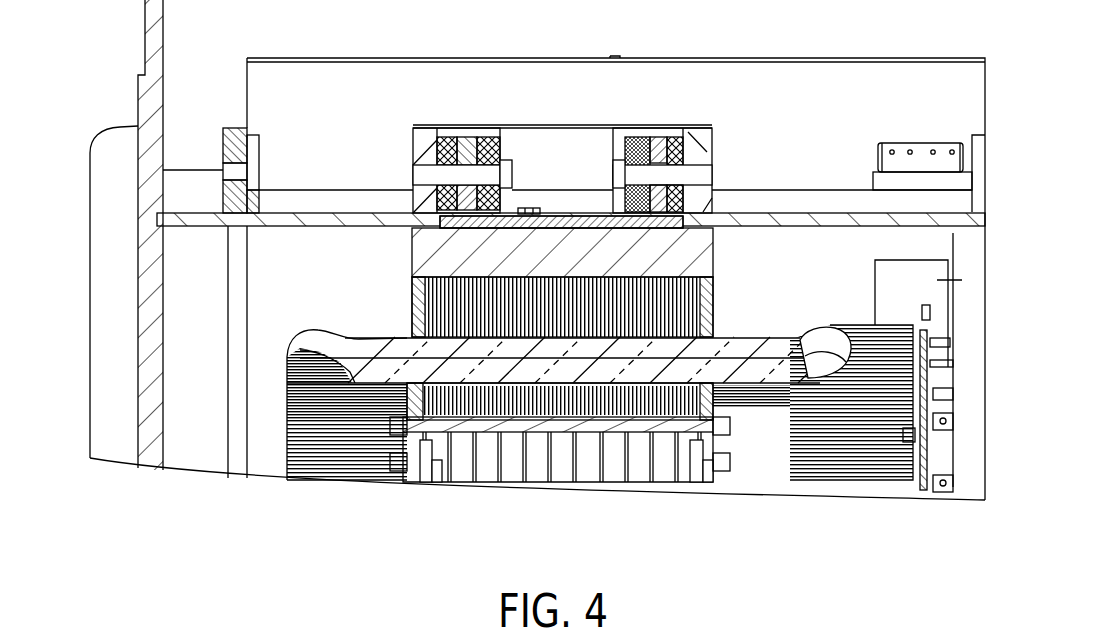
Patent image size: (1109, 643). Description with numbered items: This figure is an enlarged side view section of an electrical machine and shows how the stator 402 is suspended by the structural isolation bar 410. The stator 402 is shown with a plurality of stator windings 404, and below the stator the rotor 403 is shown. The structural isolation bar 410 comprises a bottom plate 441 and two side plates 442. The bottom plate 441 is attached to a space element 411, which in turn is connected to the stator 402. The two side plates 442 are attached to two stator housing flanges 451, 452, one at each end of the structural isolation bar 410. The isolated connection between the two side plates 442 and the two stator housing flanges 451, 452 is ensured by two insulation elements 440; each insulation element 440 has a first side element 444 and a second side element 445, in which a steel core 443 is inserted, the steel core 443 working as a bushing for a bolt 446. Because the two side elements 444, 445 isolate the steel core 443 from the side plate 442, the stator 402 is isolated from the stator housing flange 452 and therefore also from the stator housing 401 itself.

The stator housing 401 is at (100, 135).
The stator 402 is at (717, 297).
The rotor 403 is at (627, 400).
The stator windings 404 is at (298, 347).
The structural isolation bar 410 is at (513, 125).
The space element 411 is at (428, 252).
The insulation element 440 is at (347, 75).
The bottom plate 441 is at (558, 213).
The side plate 442 is at (470, 147).
The steel core 443 is at (665, 173).
The first side element 444 is at (638, 148).
The second side element 445 is at (677, 197).
The bolt 446 is at (615, 167).
The stator housing flange 451 is at (425, 142).
The stator housing flange 452 is at (700, 146).